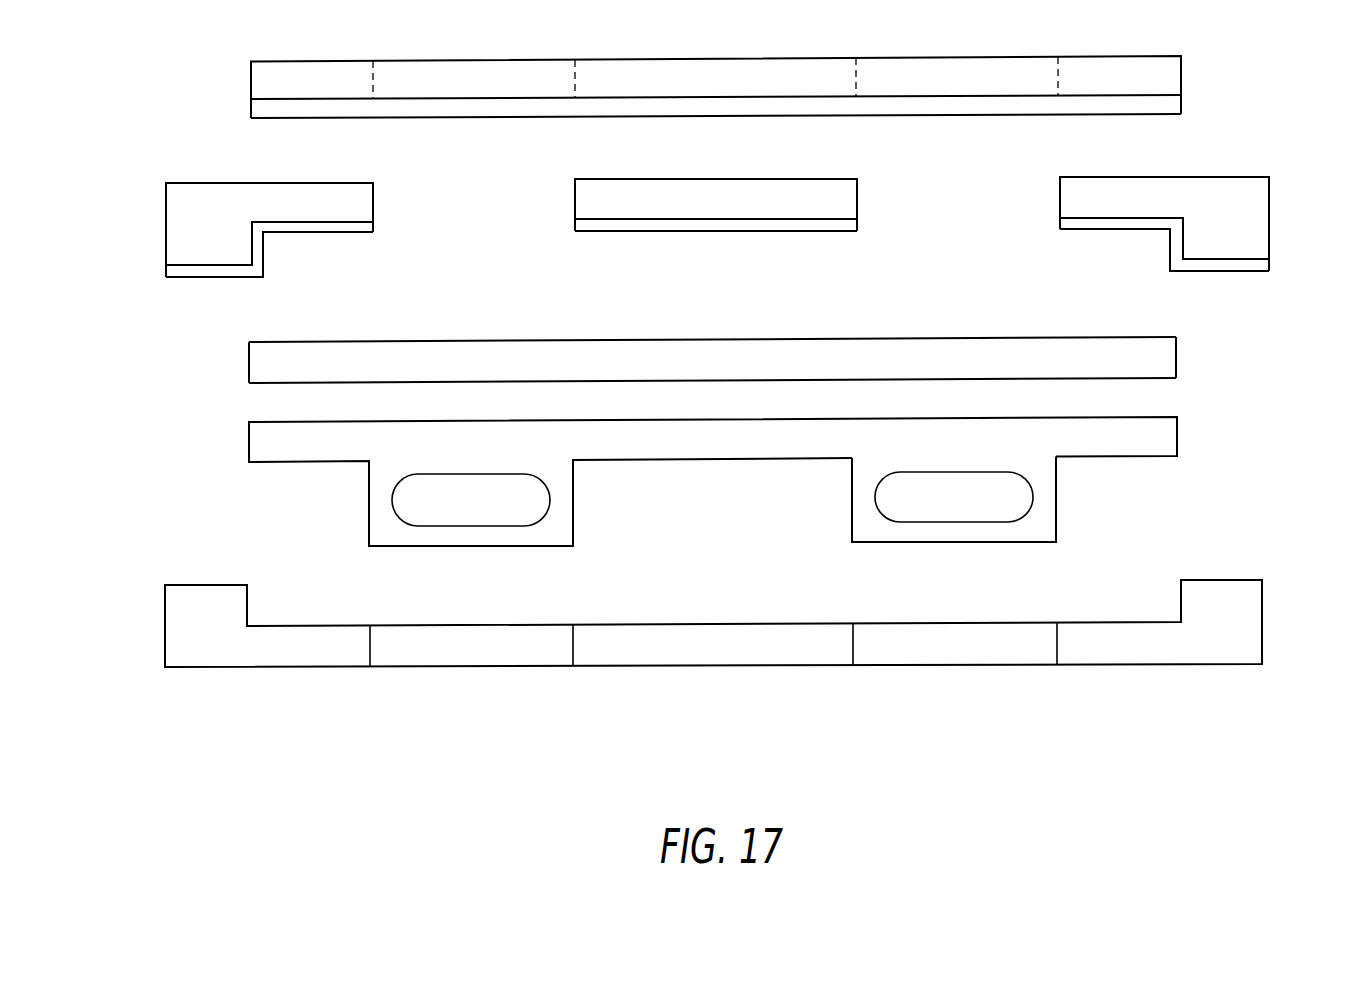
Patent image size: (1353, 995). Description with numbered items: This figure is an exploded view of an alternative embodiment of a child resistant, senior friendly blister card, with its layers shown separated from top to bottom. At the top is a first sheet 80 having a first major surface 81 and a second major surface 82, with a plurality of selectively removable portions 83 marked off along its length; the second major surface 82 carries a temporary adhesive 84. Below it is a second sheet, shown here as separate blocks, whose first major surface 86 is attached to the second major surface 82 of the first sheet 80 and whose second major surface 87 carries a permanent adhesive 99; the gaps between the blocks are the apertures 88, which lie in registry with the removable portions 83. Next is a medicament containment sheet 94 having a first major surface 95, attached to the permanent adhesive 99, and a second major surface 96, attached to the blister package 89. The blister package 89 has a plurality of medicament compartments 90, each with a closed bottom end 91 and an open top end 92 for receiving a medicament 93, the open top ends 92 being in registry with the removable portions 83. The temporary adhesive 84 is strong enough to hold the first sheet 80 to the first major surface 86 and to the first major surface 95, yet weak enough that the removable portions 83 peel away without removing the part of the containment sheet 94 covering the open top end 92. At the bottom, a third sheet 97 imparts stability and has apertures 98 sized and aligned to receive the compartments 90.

The first sheet 80 is at (1196, 82).
The first major surface 81 is at (712, 58).
The second major surface 82 is at (295, 102).
The selectively removable portions 83 is at (463, 72).
The temporary adhesive 84 is at (493, 109).
The first major surface 86 is at (263, 177).
The second major surface 87 is at (275, 224).
The apertures 88 is at (455, 197).
The blister package 89 is at (1187, 446).
The medicament compartments 90 is at (1040, 522).
The closed bottom end 91 is at (1060, 543).
The open top end 92 is at (855, 462).
The medicament 93 is at (898, 497).
The medicament containment sheet 94 is at (1180, 362).
The first major surface 95 is at (692, 335).
The second major surface 96 is at (712, 378).
The third sheet 97 is at (1272, 627).
The apertures 98 is at (455, 655).
The permanent adhesive 99 is at (300, 233).